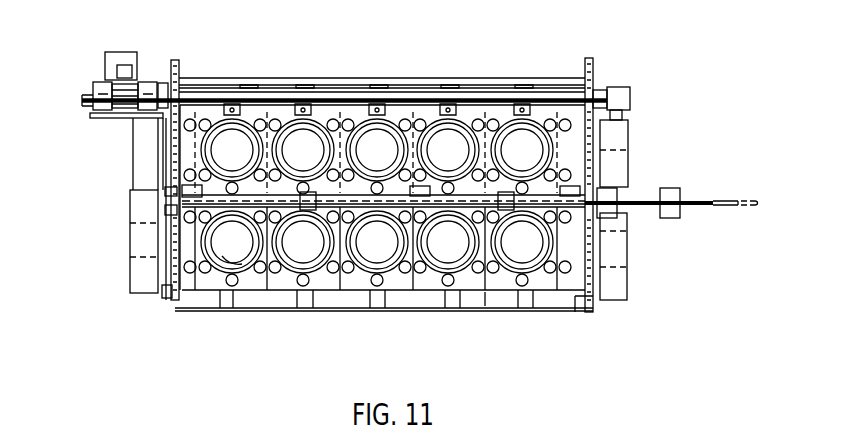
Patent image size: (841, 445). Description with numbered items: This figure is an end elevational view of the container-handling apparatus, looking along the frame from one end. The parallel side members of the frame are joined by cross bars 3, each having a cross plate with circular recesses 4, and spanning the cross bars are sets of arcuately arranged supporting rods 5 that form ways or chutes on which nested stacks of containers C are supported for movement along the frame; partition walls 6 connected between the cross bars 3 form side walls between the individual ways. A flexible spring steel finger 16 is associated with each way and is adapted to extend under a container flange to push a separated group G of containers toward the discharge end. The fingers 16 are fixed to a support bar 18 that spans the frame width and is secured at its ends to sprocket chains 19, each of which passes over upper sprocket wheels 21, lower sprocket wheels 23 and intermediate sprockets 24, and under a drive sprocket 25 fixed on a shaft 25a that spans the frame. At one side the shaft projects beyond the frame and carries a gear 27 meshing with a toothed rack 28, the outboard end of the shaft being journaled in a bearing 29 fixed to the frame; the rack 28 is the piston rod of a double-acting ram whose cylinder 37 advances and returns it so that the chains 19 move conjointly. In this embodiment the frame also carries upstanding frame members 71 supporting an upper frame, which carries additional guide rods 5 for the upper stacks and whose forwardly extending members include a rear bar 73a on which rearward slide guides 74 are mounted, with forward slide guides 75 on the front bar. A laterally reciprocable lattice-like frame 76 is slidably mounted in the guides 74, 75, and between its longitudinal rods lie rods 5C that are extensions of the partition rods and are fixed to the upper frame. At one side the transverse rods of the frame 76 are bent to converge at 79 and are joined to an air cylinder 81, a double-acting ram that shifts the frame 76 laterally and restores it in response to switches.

The cross bar 3 is at (596, 148).
The circular recess 4 is at (556, 153).
The supporting rod 5 is at (363, 290).
The rod 5C is at (487, 292).
The partition wall 6 is at (488, 115).
The flexible spring steel finger 16 is at (306, 92).
The support bar 18 is at (417, 308).
The sprocket chain 19 is at (173, 238).
The upper sprocket wheel 21 is at (160, 134).
The sprocket wheel 23 is at (165, 296).
The intermediate sprocket 24 is at (170, 208).
The drive sprocket 25 is at (181, 62).
The shaft 25a is at (418, 100).
The gear 27 is at (115, 120).
The toothed rack 28 is at (126, 72).
The bearing 29 is at (622, 90).
The cylinder 37 is at (108, 60).
The upstanding frame member 71 is at (141, 163).
The rear bar 73a is at (583, 312).
The rearward slide guide 74 is at (276, 196).
The forward slide guide 75 is at (508, 196).
The lattice-like frame 76 is at (183, 193).
The converging bend 79 is at (737, 201).
The air cylinder 81 is at (646, 190).
The container C is at (223, 266).
The group G is at (238, 265).